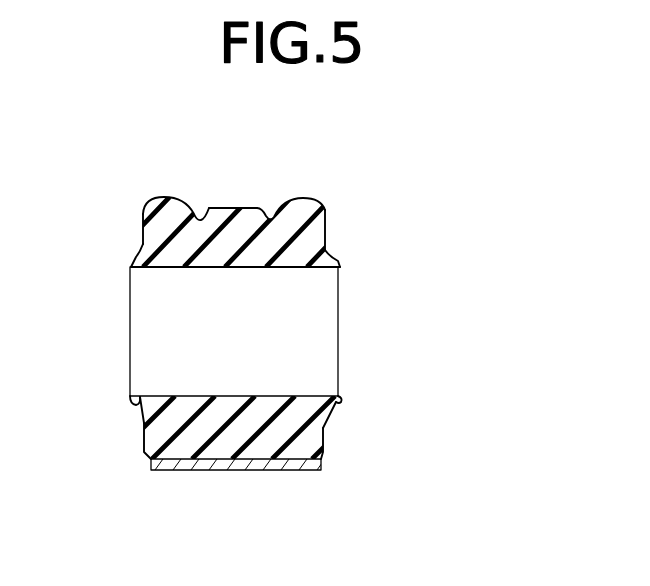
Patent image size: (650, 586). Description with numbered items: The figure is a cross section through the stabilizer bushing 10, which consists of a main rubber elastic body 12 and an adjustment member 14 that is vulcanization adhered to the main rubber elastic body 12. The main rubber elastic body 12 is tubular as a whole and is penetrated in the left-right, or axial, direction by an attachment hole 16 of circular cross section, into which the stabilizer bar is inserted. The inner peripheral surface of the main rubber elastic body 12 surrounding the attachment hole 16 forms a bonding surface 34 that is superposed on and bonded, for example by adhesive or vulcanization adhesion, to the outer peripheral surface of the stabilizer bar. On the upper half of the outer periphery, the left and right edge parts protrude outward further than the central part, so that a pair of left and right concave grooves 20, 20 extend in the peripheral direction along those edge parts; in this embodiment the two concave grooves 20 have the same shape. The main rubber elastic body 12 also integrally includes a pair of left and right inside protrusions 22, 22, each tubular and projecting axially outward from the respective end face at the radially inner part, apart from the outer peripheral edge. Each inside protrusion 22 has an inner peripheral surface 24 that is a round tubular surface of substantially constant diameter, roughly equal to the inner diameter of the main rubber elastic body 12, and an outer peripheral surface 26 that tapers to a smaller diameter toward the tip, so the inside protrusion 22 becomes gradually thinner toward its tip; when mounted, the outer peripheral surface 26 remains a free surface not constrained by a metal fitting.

The stabilizer bushing 10 is at (455, 224).
The main rubber elastic body 12 is at (325, 196).
The adjustment member 14 is at (285, 477).
The attachment hole 16 is at (258, 396).
The concave grooves 20 is at (201, 218).
The inside protrusions 22 is at (134, 251).
The inner peripheral surface 24 is at (131, 400).
The outer peripheral surface 26 is at (138, 413).
The bonding surface 34 is at (171, 272).